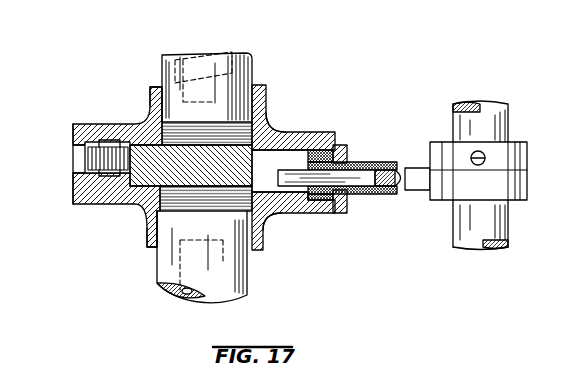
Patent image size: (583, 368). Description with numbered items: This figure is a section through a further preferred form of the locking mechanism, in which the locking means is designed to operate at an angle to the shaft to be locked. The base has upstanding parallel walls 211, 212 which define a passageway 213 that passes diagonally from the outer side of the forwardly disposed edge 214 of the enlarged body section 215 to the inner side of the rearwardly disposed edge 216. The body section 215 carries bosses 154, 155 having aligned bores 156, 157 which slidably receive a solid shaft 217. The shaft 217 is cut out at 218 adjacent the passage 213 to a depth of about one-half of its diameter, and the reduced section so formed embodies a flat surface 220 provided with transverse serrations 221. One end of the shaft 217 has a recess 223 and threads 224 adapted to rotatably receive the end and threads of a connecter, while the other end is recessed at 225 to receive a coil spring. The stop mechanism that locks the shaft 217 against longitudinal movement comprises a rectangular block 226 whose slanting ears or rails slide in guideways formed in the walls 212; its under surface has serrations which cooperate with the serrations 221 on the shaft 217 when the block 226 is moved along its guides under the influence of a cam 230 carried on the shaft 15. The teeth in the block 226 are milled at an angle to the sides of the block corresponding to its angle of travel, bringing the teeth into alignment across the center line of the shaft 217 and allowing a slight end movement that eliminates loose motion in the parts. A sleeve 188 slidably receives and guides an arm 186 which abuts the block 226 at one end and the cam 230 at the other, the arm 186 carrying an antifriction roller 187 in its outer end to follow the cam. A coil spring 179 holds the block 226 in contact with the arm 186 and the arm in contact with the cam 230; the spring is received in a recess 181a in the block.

The shaft 15 is at (505, 108).
The boss 154 is at (260, 244).
The boss 155 is at (254, 88).
The bore 156 is at (166, 240).
The bore 157 is at (170, 97).
The coil spring 179 is at (88, 164).
The spring 181a is at (87, 148).
The arm 186 is at (362, 196).
The antifriction roller 187 is at (402, 192).
The sleeve 188 is at (368, 165).
The upstanding wall 211 is at (119, 229).
The upstanding wall 212 is at (115, 132).
The passageway 213 is at (300, 148).
The forwardly disposed edge 214 is at (340, 144).
The enlarged body section 215 is at (283, 131).
The rearwardly disposed edge 216 is at (88, 169).
The solid shaft 217 is at (243, 293).
The cut out 218 is at (172, 206).
The flat surface 220 is at (172, 130).
The transverse serrations 221 is at (263, 217).
The recess 223 is at (165, 53).
The threads 224 is at (192, 50).
The recess 225 is at (172, 296).
The rectangular block 226 is at (252, 190).
The cam 230 is at (528, 161).